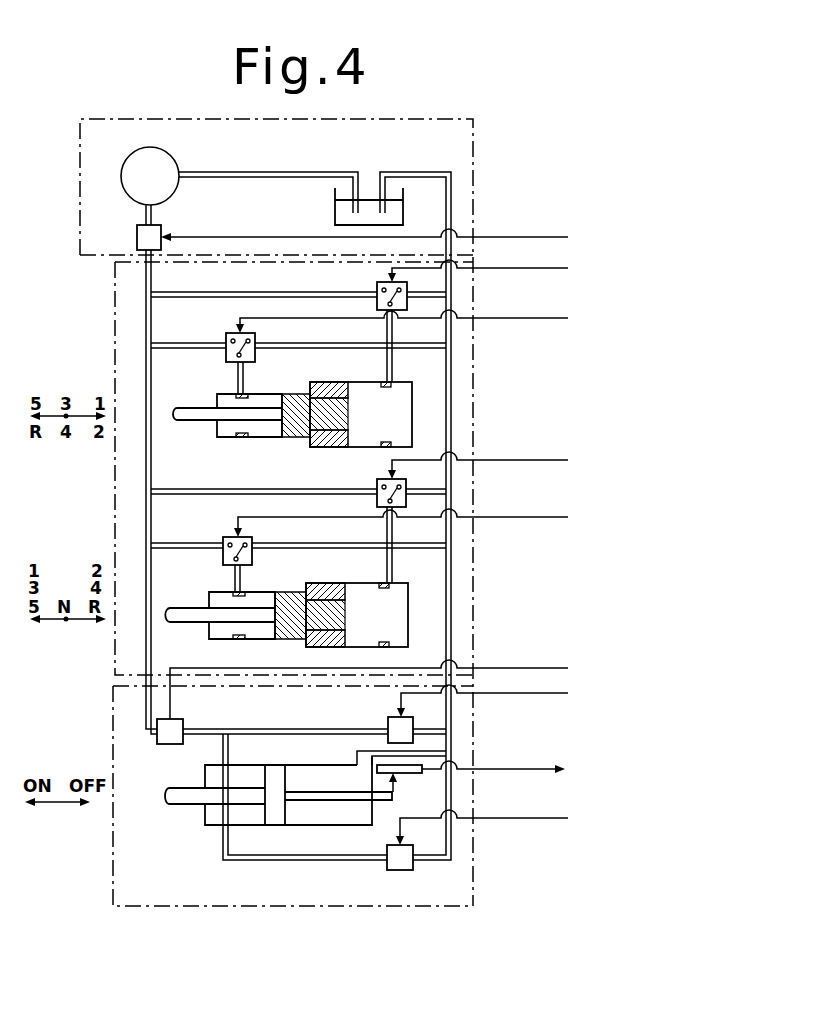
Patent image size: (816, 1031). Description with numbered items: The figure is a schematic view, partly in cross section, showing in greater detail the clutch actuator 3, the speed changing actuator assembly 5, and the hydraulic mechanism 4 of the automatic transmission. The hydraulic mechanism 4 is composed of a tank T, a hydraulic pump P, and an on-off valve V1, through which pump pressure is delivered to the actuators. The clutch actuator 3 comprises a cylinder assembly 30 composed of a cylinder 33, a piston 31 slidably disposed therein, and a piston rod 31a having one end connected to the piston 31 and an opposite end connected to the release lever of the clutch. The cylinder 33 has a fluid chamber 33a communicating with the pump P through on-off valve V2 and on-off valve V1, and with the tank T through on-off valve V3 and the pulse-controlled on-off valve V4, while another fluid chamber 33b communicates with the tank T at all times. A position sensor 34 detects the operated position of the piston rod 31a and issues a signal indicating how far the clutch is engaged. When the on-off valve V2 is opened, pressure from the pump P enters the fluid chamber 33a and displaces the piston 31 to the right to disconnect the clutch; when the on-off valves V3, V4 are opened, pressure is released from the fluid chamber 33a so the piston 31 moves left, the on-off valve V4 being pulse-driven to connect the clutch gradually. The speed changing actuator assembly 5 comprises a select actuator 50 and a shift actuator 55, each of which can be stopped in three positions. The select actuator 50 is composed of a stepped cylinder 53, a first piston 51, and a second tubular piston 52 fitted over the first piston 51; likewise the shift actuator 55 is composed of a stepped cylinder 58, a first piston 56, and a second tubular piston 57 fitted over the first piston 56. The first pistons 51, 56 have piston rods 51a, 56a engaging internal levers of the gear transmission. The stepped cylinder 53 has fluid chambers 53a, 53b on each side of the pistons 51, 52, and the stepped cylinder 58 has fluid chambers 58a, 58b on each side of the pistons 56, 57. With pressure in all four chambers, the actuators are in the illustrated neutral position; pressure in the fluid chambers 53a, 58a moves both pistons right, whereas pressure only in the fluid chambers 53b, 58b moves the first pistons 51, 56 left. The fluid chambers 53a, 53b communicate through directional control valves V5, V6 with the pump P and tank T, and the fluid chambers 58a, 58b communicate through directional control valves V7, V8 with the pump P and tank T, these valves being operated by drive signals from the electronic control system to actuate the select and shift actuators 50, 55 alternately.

The clutch actuator 3 is at (118, 876).
The hydraulic mechanism 4 is at (463, 162).
The speed changing actuator assembly 5 is at (118, 309).
The cylinder assembly 30 is at (195, 818).
The piston 31 is at (278, 818).
The piston rod 31a is at (178, 796).
The cylinder 33 is at (297, 773).
The fluid chamber 33a is at (218, 823).
The fluid chamber 33b is at (362, 818).
The position sensor 34 is at (408, 775).
The select actuator 50 is at (247, 440).
The first piston 51 is at (283, 438).
The piston rod 51a is at (188, 411).
The second tubular piston 52 is at (328, 448).
The stepped cylinder 53 is at (285, 392).
The fluid chamber 53a is at (217, 438).
The fluid chamber 53b is at (407, 418).
The shift actuator 55 is at (231, 639).
The first piston 56 is at (294, 640).
The piston rod 56a is at (178, 616).
The second tubular piston 57 is at (333, 584).
The stepped cylinder 58 is at (278, 592).
The fluid chamber 58a is at (207, 632).
The fluid chamber 58b is at (405, 620).
The hydraulic pump P is at (150, 176).
The tank T is at (369, 185).
The on-off valve V1 is at (132, 228).
The on-off valve V2 is at (182, 723).
The on-off valve V3 is at (385, 722).
The on-off valve V4 is at (400, 873).
The directional control valve V5 is at (223, 357).
The directional control valve V6 is at (376, 323).
The directional control valve V7 is at (221, 555).
The directional control valve V8 is at (376, 519).